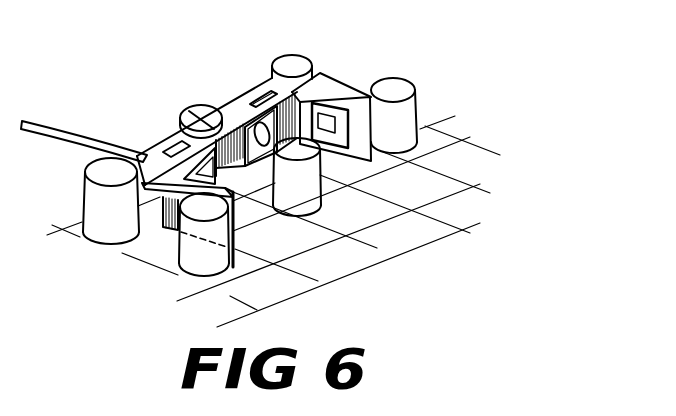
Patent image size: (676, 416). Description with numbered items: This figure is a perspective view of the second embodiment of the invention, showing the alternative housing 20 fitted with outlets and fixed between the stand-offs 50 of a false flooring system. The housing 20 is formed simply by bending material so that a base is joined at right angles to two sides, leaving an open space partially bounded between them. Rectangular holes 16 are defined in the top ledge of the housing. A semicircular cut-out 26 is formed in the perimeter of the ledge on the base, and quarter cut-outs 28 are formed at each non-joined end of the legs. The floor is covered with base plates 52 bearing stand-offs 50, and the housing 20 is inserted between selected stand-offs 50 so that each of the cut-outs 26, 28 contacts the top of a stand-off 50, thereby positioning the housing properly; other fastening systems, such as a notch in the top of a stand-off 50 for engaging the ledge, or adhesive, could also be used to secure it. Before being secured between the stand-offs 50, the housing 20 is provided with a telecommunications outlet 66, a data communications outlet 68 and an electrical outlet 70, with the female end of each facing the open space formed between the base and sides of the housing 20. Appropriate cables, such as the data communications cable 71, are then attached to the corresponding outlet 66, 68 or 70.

The rectangular holes 16 is at (260, 92).
The alternative housing 20 is at (268, 139).
The semicircular cut-out 26 is at (187, 110).
The quarter cut-outs 28 is at (402, 88).
The stand-offs 50 is at (90, 200).
The base plates 52 is at (373, 187).
The telecommunications outlet 66 is at (326, 108).
The data communications outlet 68 is at (213, 170).
The electrical outlet 70 is at (257, 128).
The data communications cable 71 is at (102, 138).